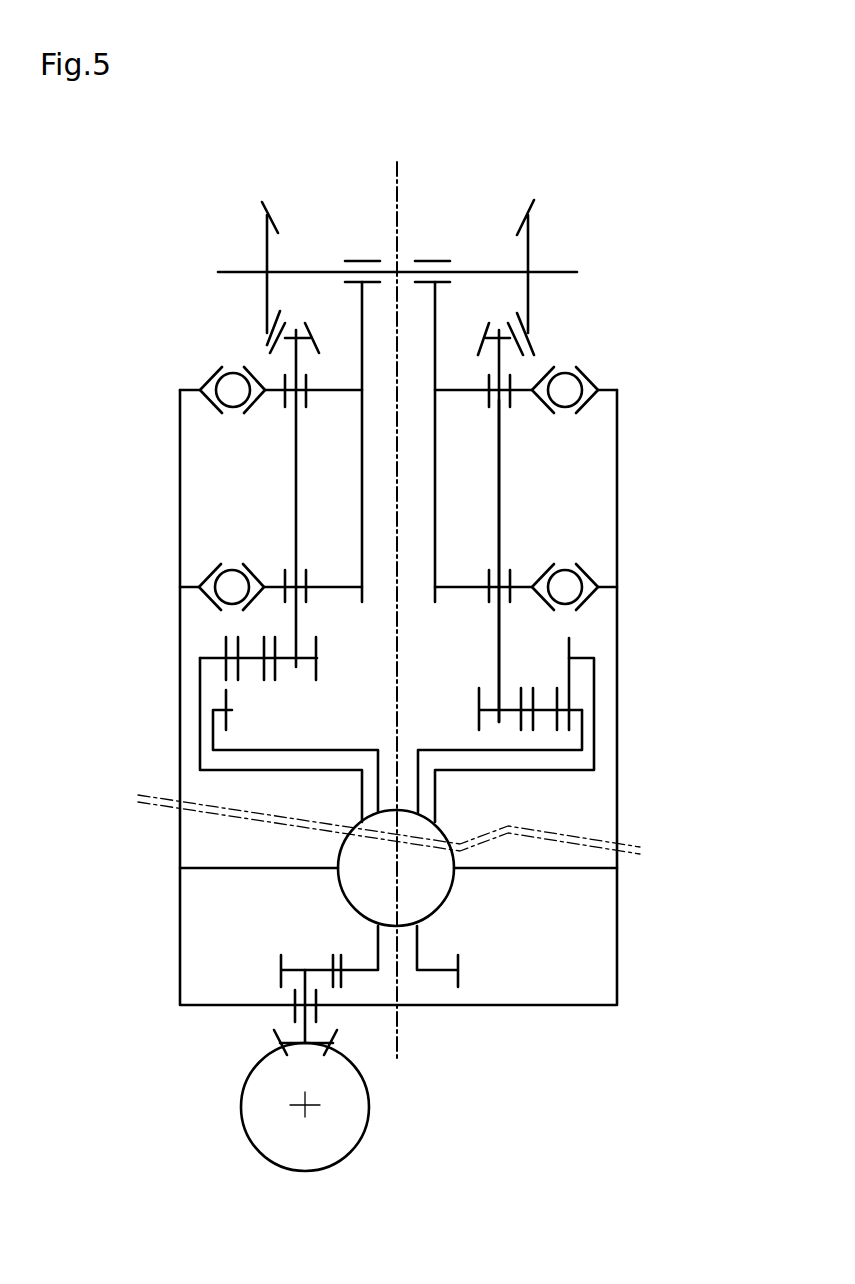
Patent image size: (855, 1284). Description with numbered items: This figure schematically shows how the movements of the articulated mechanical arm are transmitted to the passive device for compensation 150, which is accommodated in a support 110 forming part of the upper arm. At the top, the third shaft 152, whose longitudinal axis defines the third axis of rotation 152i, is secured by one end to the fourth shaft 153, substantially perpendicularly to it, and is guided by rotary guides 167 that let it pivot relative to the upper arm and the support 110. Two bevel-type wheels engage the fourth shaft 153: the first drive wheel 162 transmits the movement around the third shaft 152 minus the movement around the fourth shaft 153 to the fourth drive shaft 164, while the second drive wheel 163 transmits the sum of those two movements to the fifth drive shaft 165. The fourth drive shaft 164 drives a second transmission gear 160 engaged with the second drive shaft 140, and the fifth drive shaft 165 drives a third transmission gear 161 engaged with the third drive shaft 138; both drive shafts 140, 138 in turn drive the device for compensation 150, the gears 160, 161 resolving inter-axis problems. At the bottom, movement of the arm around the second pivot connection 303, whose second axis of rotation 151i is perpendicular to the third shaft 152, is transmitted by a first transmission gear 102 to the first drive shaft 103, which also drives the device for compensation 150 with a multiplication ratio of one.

The third axis of rotation 152i is at (397, 177).
The fourth shaft 153 is at (247, 270).
The second drive wheel 163 is at (252, 353).
The first drive wheel 162 is at (528, 333).
The fifth drive shaft 165 is at (293, 437).
The rotary guides 167 is at (565, 428).
The third shaft 152 is at (360, 488).
The fourth drive shaft 164 is at (500, 485).
The third transmission gear 161 is at (252, 647).
The second transmission gear 160 is at (546, 716).
The support 110 is at (180, 657).
The third drive shaft 138 is at (361, 785).
The second drive shaft 140 is at (420, 808).
The device for compensation 150 is at (362, 883).
The first transmission gear 102 is at (306, 969).
The first drive shaft 103 is at (420, 940).
The second pivot connection 303 is at (370, 1102).
The second axis of rotation 151i is at (303, 1107).